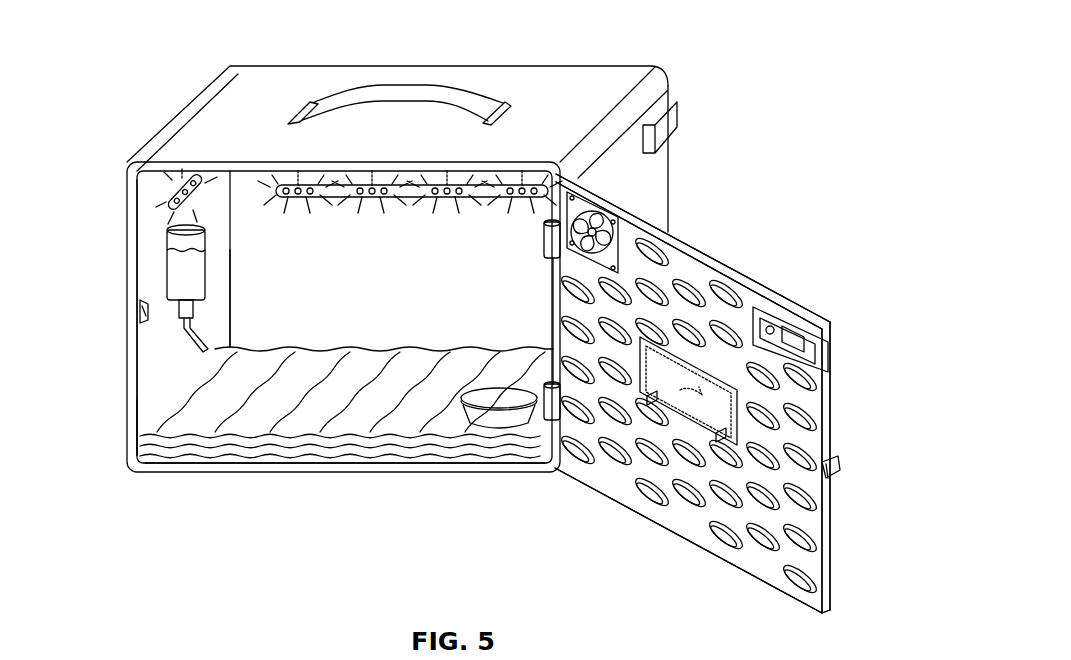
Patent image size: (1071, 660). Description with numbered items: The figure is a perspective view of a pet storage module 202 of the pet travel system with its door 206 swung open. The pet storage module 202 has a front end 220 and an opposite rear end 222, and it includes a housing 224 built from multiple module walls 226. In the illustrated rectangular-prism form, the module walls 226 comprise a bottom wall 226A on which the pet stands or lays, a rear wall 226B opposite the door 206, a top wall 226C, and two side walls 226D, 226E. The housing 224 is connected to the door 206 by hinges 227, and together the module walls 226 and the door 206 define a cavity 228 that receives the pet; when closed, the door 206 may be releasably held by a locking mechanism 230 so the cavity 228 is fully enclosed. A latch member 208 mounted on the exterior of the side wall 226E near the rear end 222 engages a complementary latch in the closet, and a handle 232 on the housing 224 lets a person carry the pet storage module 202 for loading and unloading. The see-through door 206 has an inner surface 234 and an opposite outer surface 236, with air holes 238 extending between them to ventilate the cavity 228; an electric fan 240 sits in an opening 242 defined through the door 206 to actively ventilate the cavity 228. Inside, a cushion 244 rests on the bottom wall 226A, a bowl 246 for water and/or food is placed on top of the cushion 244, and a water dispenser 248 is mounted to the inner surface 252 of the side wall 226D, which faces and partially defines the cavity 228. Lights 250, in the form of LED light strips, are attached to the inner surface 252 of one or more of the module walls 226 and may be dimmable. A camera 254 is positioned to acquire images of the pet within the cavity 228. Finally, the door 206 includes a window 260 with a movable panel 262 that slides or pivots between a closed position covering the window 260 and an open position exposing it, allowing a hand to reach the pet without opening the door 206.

The pet storage module 202 is at (147, 78).
The door 206 is at (830, 380).
The latch member 208 is at (689, 118).
The front end 220 is at (126, 412).
The rear end 222 is at (508, 62).
The housing 224 is at (297, 82).
The module walls 226 is at (133, 348).
The bottom wall 226A is at (202, 472).
The rear wall 226B is at (250, 333).
The top wall 226C is at (364, 165).
The side wall 226D is at (135, 422).
The side wall 226E is at (578, 182).
The hinges 227 is at (553, 410).
The cavity 228 is at (508, 230).
The locking mechanism 230 is at (139, 310).
The handle 232 is at (430, 88).
The inner surface 234 is at (768, 563).
The outer surface 236 is at (830, 497).
The air holes 238 is at (808, 509).
The electric fan 240 is at (600, 212).
The opening 242 is at (620, 249).
The cushion 244 is at (357, 435).
The bowl 246 is at (487, 420).
The water dispenser 248 is at (167, 240).
The lights 250 is at (488, 192).
The inner surface 252 is at (249, 190).
The camera 254 is at (828, 356).
The window 260 is at (677, 352).
The movable panel 262 is at (720, 388).